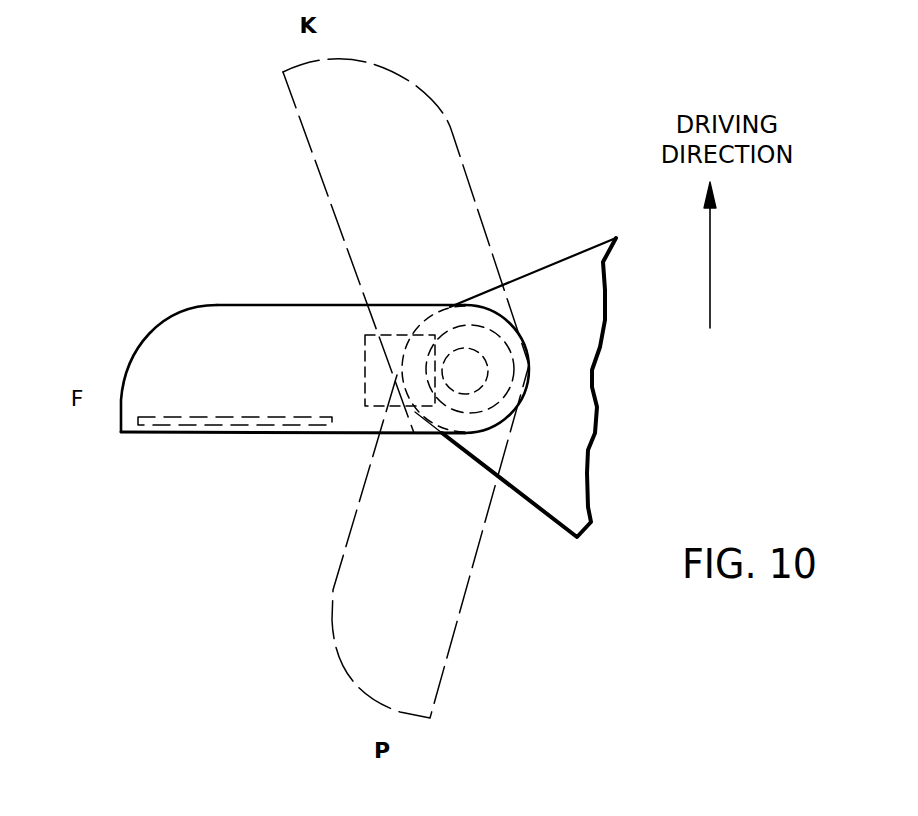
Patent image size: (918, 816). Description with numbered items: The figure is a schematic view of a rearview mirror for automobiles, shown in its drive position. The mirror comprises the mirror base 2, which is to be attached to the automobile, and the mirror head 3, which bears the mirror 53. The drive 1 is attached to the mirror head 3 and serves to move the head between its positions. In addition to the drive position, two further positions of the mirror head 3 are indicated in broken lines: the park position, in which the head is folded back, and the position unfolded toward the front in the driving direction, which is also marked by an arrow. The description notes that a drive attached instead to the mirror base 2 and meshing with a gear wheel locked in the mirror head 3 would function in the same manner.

The drive 1 is at (368, 387).
The mirror base 2 is at (577, 394).
The mirror head 3 is at (182, 315).
The mirror 53 is at (272, 428).